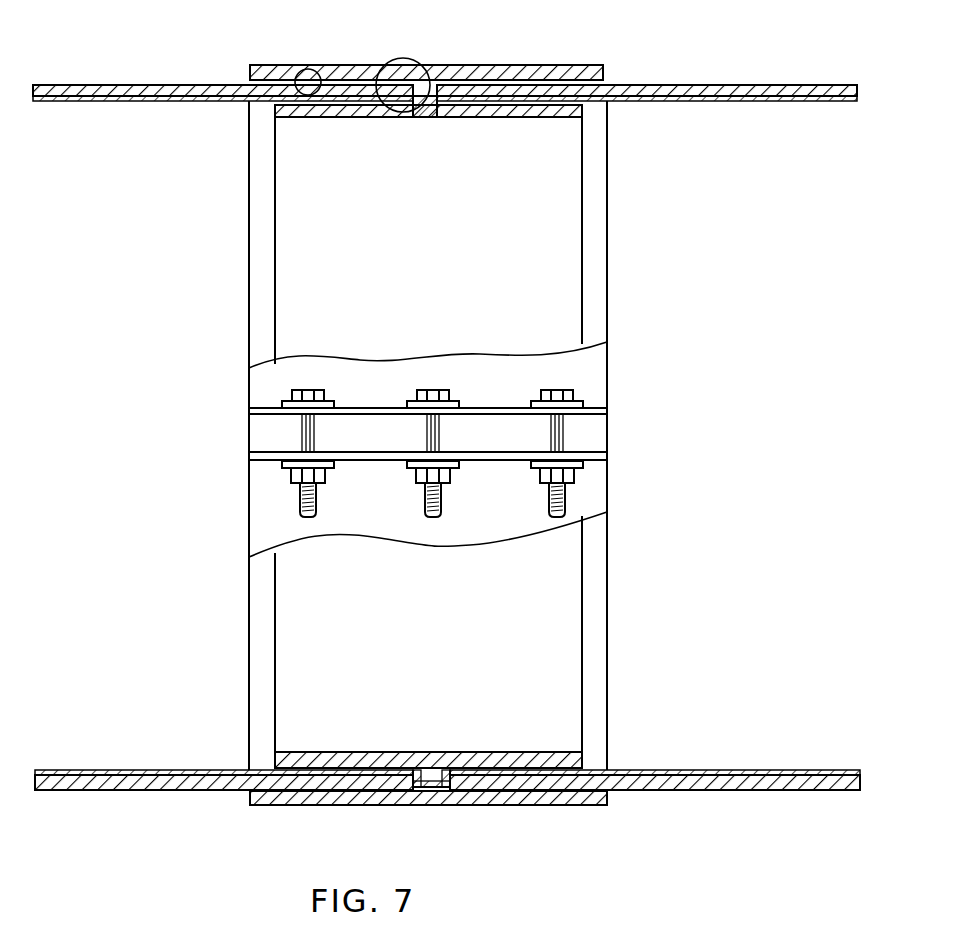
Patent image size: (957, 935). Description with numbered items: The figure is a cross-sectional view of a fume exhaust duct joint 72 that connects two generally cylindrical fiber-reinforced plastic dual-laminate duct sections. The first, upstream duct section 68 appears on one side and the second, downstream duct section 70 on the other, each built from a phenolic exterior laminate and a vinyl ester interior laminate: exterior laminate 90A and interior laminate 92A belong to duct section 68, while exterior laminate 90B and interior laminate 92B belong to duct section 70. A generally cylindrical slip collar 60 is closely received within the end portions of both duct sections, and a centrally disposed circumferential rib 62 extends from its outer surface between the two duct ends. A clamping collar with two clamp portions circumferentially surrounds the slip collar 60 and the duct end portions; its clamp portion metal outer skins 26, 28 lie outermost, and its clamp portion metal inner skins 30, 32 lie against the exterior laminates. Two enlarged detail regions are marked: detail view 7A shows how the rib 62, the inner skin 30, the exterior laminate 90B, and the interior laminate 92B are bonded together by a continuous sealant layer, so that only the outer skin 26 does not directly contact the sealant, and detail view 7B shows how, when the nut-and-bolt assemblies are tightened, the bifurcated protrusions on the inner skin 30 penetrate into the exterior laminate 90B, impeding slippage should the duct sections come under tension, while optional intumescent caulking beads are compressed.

The detail view 7A is at (408, 58).
The detail view 7B is at (313, 70).
The clamp portion metal outer skin 26 is at (511, 64).
The clamp portion metal outer skin 28 is at (452, 807).
The clamp portion metal inner skin 30 is at (613, 80).
The clamp portion metal inner skin 32 is at (612, 792).
The slip collar 60 is at (502, 119).
The circumferential rib 62 is at (435, 118).
The first duct section 68 is at (648, 434).
The second duct section 70 is at (223, 434).
The fume exhaust duct joint 72 is at (197, 297).
The phenolic exterior laminate 90A is at (704, 84).
The phenolic exterior laminate 90B is at (176, 84).
The vinyl ester interior laminate 92A is at (707, 103).
The vinyl ester interior laminate 92B is at (175, 104).